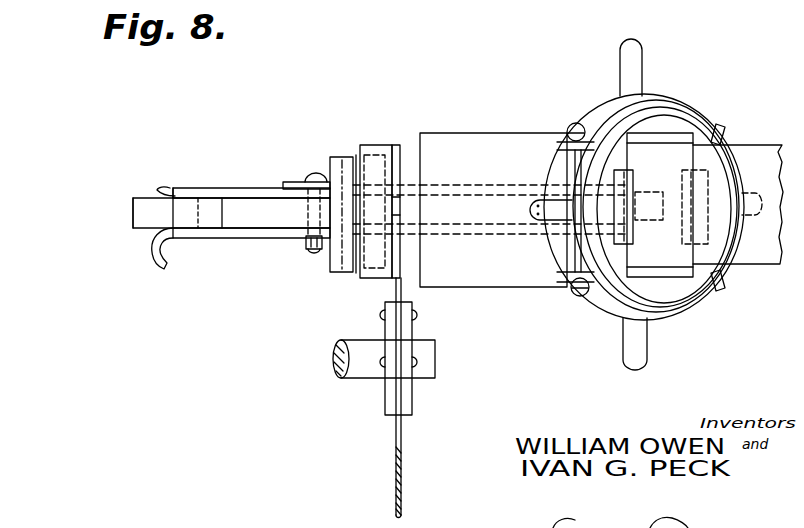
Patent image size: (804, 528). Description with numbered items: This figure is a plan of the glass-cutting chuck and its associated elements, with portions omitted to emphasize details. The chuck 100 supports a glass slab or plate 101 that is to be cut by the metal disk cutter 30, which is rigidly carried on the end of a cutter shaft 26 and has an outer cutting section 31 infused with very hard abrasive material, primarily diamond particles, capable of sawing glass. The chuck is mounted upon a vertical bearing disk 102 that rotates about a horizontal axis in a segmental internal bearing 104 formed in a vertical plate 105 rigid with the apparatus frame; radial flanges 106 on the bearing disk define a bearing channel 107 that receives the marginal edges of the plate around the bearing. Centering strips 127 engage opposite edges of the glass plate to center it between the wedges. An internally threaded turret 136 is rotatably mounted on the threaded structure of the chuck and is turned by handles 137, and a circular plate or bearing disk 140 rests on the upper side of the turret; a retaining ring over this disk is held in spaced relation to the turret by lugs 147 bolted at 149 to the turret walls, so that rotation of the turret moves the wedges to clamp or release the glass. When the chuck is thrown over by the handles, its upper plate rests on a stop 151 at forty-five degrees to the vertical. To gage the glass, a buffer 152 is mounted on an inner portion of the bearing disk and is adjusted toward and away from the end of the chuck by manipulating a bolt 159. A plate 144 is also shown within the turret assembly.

The cutter shaft 26 is at (437, 358).
The metal disk cutter 30 is at (395, 437).
The outer cutting section 31 is at (395, 509).
The chuck 100 is at (513, 124).
The glass slab or plate 101 is at (757, 262).
The vertical bearing disk 102 is at (248, 187).
The segmental internal bearing 104 is at (281, 217).
The vertical plate 105 is at (141, 213).
The radial flanges 106 is at (241, 258).
The bearing channel 107 is at (231, 203).
The centering strips 127 is at (652, 187).
The turret 136 is at (594, 110).
The handles 137 is at (640, 50).
The circular plate or bearing disk 140 is at (672, 300).
The plate 144 is at (670, 134).
The lugs 147 is at (593, 297).
The bolts 149 is at (568, 128).
The stop 151 is at (212, 206).
The buffer 152 is at (334, 158).
The bolt 159 is at (311, 173).